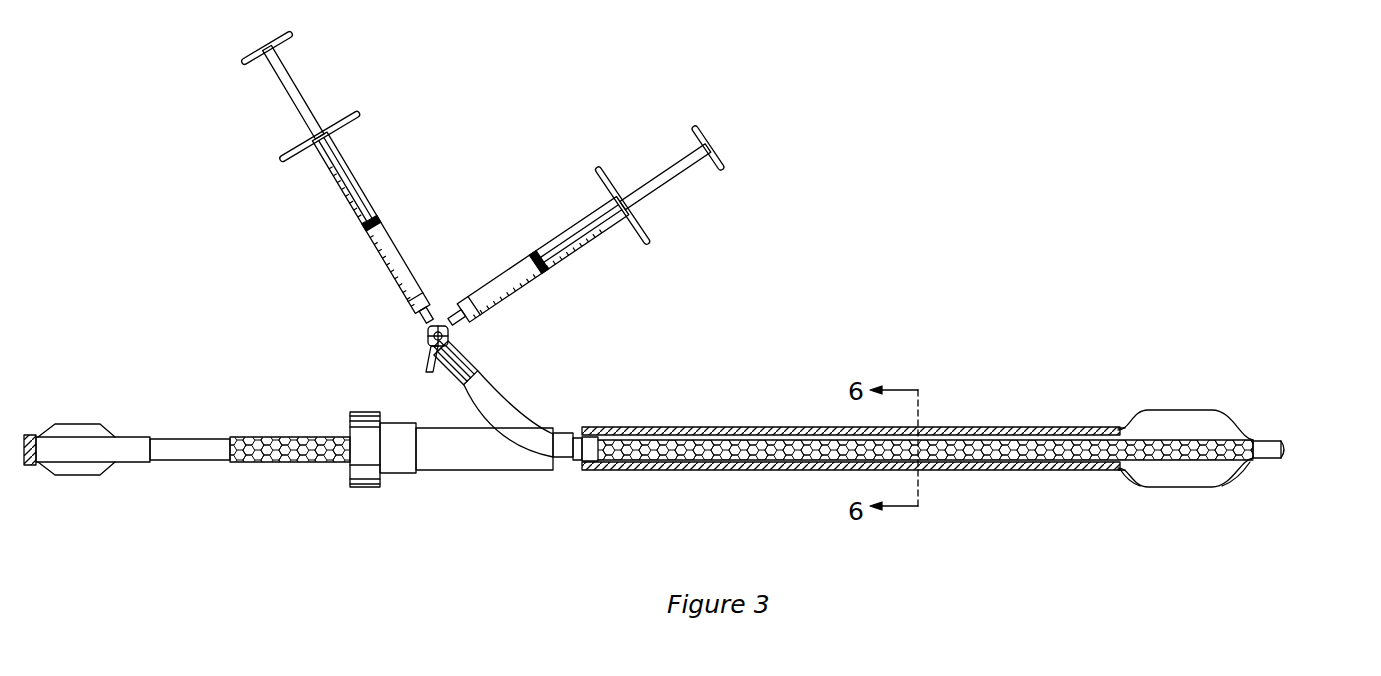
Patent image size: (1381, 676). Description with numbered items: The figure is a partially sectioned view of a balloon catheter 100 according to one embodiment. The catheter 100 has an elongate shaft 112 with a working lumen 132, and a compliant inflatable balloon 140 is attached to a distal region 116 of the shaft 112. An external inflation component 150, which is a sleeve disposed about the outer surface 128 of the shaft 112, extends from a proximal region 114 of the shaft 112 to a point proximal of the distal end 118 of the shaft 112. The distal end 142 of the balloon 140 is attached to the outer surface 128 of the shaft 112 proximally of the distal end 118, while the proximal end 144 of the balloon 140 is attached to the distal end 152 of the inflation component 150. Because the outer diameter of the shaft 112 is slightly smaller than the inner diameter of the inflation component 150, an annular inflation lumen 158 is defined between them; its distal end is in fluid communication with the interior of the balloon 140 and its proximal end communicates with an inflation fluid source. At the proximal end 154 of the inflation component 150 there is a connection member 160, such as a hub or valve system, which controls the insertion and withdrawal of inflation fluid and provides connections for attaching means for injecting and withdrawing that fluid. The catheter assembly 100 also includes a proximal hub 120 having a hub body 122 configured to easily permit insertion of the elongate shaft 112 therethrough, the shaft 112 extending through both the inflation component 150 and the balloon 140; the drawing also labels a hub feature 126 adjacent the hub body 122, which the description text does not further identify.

The catheter 100 is at (885, 296).
The elongate shaft 112 is at (822, 455).
The proximal region 114 is at (630, 508).
The distal region 116 is at (1265, 493).
The distal end 118 is at (1285, 440).
The proximal hub 120 is at (383, 520).
The hub body 122 is at (473, 470).
The hub distal connector 126 is at (565, 470).
The outer surface 128 is at (760, 440).
The working lumen 132 is at (1285, 447).
The compliant inflatable balloon 140 is at (1197, 420).
The distal end of the balloon 142 is at (1240, 487).
The proximal end of the balloon 144 is at (1135, 487).
The external inflation component 150 is at (945, 428).
The distal end of the inflation component 152 is at (1125, 470).
The proximal end of the inflation component 154 is at (477, 383).
The annular inflation lumen 158 is at (1138, 410).
The connection member 160 is at (445, 285).